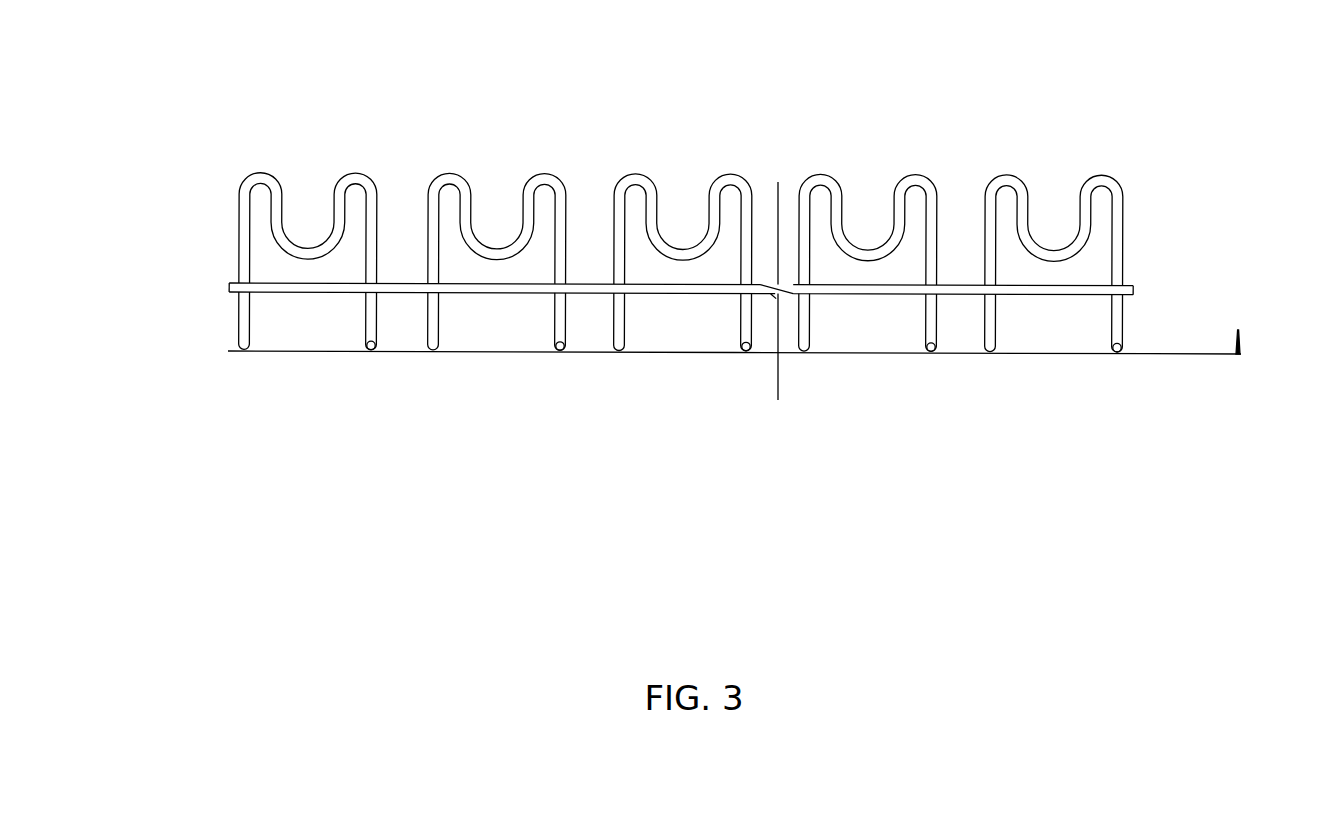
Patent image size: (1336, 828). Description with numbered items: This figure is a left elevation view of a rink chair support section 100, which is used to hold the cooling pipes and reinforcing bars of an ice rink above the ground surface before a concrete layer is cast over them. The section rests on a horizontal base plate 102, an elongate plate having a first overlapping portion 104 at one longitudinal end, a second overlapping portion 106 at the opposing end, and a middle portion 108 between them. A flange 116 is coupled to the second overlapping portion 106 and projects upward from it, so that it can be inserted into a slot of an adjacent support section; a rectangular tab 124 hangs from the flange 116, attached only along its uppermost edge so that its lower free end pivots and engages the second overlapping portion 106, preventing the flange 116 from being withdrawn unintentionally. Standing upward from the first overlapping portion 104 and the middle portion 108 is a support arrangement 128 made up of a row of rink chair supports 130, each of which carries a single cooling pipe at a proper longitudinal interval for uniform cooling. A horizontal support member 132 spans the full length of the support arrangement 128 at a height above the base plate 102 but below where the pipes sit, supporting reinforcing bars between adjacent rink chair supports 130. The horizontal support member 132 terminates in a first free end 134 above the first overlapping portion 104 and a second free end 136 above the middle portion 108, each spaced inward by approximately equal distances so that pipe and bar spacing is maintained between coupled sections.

The rink chair support section 100 is at (1153, 123).
The horizontal base plate 102 is at (899, 356).
The first overlapping portion 104 is at (309, 355).
The second overlapping portion 106 is at (1172, 373).
The middle portion 108 is at (701, 383).
The flange 116 is at (1256, 343).
The tab 124 is at (1224, 337).
The support arrangement 128 is at (203, 218).
The rink chair supports 130 is at (684, 186).
The horizontal support member 132 is at (582, 294).
The first free end 134 is at (228, 287).
The second free end 136 is at (1138, 289).